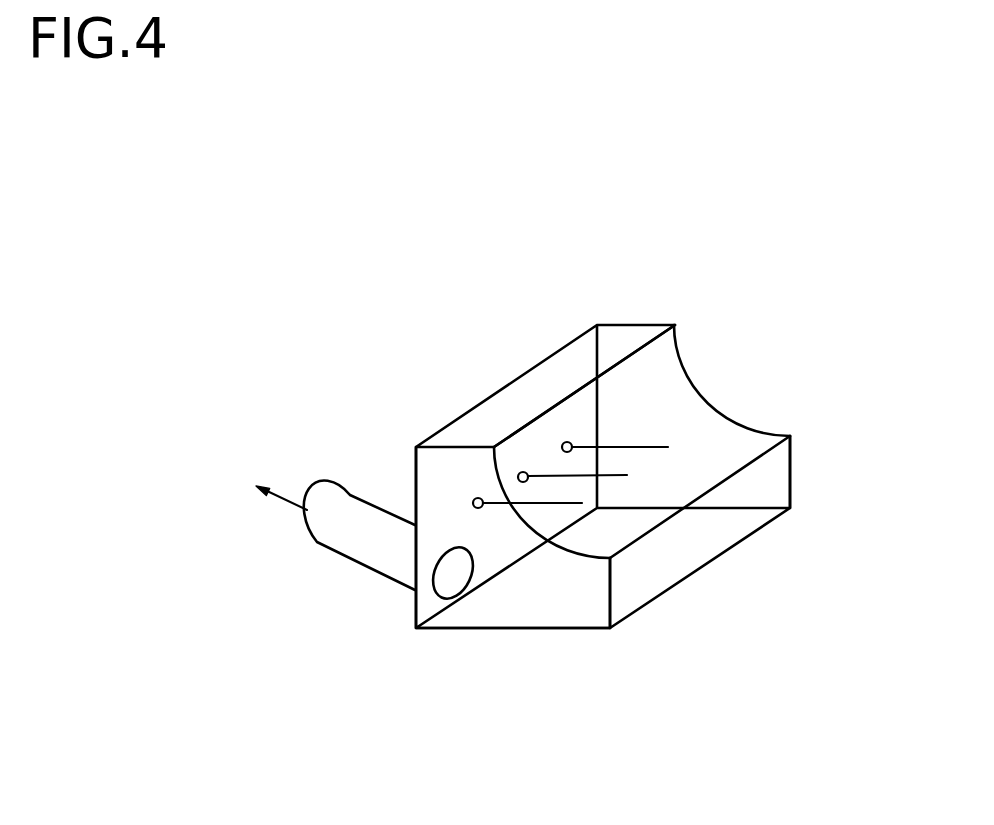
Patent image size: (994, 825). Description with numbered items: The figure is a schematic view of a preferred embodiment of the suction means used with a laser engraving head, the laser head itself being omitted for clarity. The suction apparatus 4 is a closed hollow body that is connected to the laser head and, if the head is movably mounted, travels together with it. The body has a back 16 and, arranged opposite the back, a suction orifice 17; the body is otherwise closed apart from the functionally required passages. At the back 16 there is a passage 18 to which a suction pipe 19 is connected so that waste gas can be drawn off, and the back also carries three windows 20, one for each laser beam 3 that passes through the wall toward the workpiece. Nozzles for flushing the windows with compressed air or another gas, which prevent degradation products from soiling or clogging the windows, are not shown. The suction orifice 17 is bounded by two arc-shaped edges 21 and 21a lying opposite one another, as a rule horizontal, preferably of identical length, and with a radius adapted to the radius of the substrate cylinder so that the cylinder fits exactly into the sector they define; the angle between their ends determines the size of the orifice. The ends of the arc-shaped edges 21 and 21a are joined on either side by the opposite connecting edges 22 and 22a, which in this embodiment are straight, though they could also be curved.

The laser beam 3 is at (650, 447).
The suction apparatus 4 is at (630, 325).
The back 16 is at (493, 543).
The suction orifice 17 is at (670, 370).
The passage 18 is at (447, 585).
The suction pipe 19 is at (378, 517).
The window 20 is at (566, 441).
The arc-shaped edge 21 is at (767, 428).
The arc-shaped edge 21a is at (563, 553).
The connecting edge 22 is at (540, 413).
The connecting edge 22a is at (650, 528).